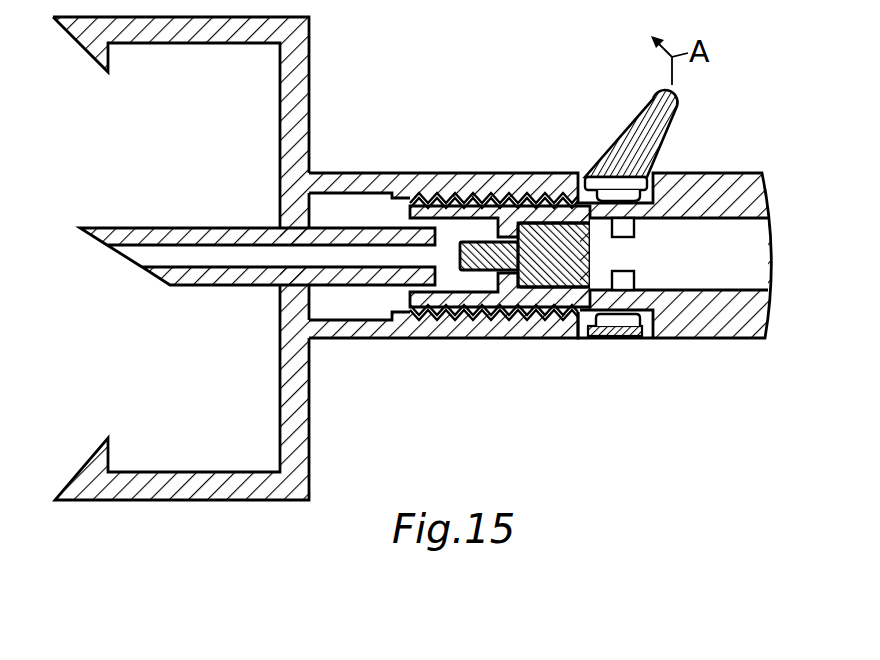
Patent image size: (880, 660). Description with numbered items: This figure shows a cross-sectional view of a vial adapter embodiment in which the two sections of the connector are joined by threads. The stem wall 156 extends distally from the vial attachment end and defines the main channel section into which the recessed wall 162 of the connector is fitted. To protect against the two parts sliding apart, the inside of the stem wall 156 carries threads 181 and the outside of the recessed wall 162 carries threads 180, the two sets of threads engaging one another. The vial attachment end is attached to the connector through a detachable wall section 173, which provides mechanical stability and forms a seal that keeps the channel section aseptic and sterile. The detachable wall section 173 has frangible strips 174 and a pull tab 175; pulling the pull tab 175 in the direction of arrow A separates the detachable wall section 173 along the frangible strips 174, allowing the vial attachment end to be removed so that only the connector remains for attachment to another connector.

The stem wall 156 is at (345, 338).
The recessed wall 162 is at (645, 193).
The detachable wall section 173 is at (610, 342).
The frangible strips 174 is at (653, 342).
The pull tab 175 is at (632, 130).
The threads 180 is at (435, 338).
The threads 181 is at (507, 195).